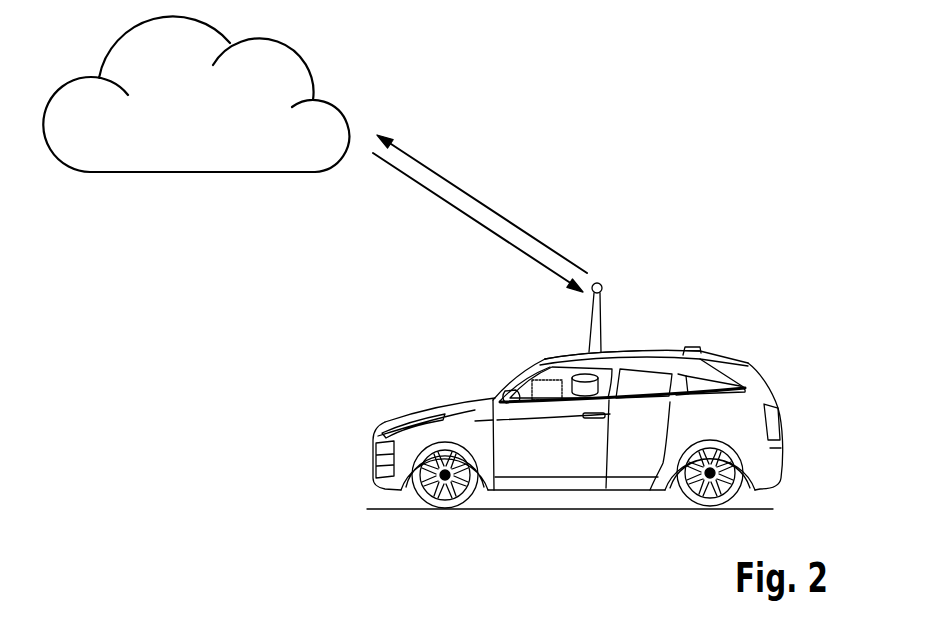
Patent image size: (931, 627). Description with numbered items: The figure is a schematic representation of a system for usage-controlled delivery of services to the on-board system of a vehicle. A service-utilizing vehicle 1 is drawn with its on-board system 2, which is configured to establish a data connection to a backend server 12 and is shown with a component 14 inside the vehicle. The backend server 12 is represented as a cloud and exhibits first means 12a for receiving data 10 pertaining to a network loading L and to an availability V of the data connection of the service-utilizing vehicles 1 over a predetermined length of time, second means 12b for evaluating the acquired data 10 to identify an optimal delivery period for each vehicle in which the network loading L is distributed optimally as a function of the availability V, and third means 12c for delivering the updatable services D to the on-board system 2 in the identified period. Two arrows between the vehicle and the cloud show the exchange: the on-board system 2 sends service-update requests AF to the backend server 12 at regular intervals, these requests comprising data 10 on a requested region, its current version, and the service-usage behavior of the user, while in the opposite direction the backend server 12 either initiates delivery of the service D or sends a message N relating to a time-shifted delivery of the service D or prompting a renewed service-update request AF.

The service-utilizing vehicle 1 is at (676, 353).
The on-board system 2 is at (533, 358).
The control device 14 is at (568, 350).
The data 10 is at (326, 94).
The backend server 12 is at (326, 94).
The first means 12a is at (326, 94).
The second means 12b is at (326, 94).
The third means 12c is at (326, 94).
The network loading L is at (300, 52).
The availability of a data connection V is at (482, 204).
The service-update request AF is at (438, 178).
The updatable service D is at (478, 222).
The message N is at (484, 228).